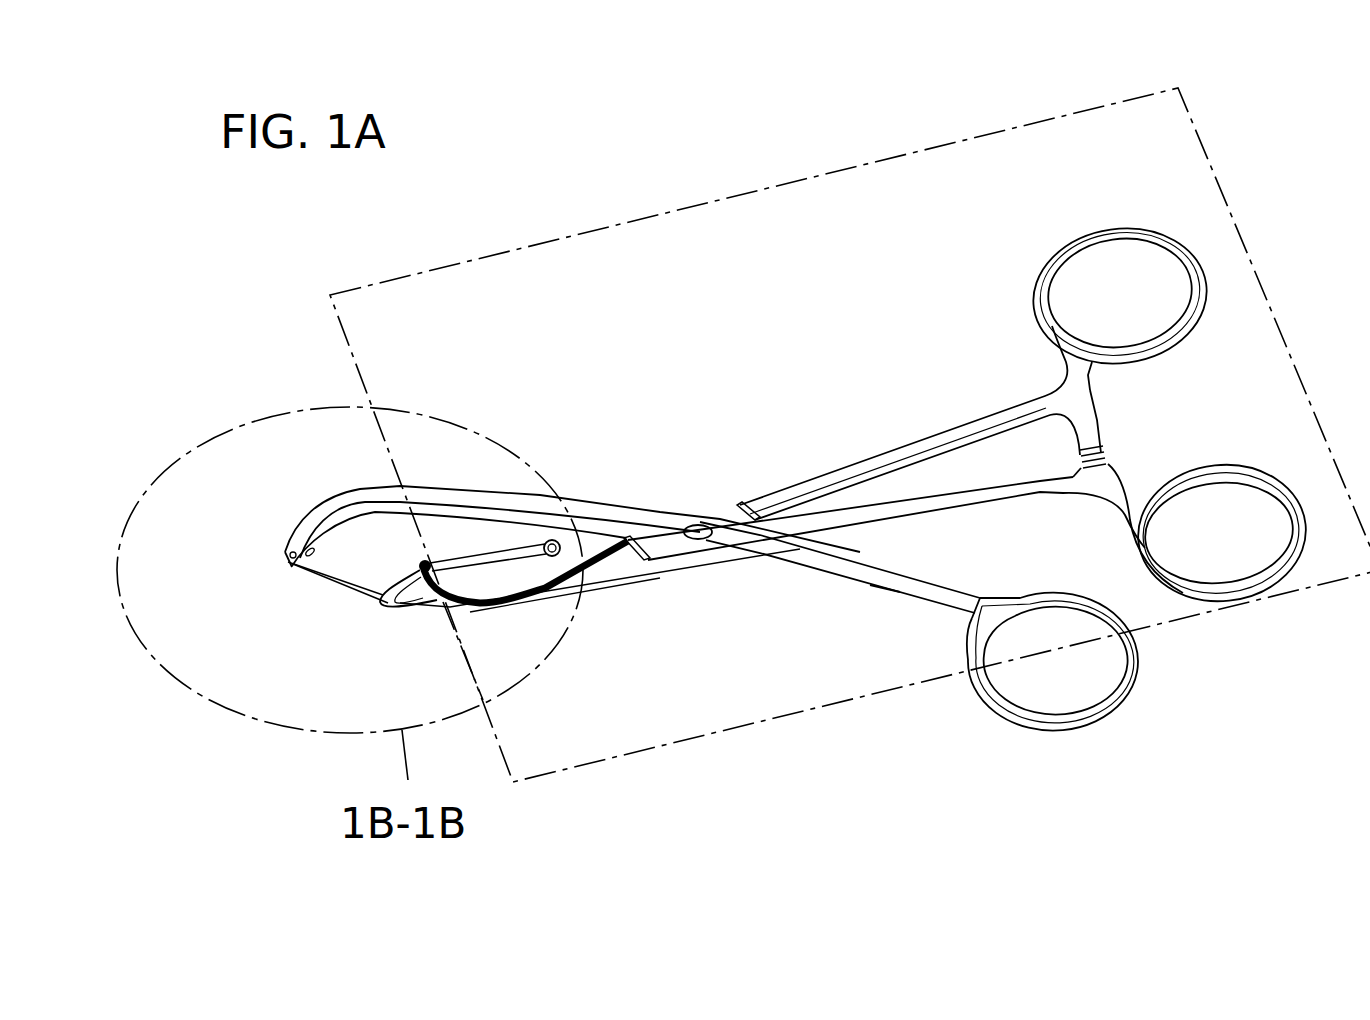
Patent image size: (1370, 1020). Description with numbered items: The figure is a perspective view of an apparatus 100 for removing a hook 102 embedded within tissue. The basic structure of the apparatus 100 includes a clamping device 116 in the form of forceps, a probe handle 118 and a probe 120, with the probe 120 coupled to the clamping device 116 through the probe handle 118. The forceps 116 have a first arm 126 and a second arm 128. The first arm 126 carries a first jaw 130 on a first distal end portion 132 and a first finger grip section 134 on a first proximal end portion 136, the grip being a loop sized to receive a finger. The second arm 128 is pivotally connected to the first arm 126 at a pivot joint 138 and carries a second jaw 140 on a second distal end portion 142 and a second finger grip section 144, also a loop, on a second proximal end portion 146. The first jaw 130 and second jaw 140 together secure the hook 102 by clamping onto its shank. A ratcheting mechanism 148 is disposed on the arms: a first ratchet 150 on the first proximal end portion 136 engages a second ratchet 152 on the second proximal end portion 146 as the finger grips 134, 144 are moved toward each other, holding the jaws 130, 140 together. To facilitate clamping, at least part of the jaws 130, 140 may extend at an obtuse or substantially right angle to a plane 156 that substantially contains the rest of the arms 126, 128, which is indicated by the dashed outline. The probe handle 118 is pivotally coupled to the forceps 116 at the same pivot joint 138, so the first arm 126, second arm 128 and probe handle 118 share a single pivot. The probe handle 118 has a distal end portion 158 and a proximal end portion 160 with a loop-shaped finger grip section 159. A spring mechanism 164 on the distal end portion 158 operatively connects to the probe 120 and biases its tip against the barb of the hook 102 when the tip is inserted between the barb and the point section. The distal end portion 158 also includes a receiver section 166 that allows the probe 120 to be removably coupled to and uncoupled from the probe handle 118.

The apparatus 100 is at (720, 105).
The hook 102 is at (395, 572).
The clamping device 116 is at (798, 456).
The probe handle 118 is at (833, 583).
The probe 120 is at (475, 574).
The first arm 126 is at (858, 463).
The second arm 128 is at (1040, 508).
The first jaw 130 is at (446, 611).
The first distal end portion 132 is at (605, 577).
The first finger grip section 134 is at (1092, 232).
The first proximal end portion 136 is at (991, 418).
The pivot joint 138 is at (697, 525).
The second jaw 140 is at (426, 559).
The second distal end portion 142 is at (585, 572).
The second finger grip section 144 is at (1212, 590).
The second proximal end portion 146 is at (992, 508).
The ratcheting mechanism 148 is at (1163, 426).
The first ratchet 150 is at (1102, 402).
The second ratchet 152 is at (1108, 452).
The plane 156 is at (1025, 110).
The distal end portion 158 is at (362, 495).
The finger grip section 159 is at (1063, 735).
The proximal end portion 160 is at (880, 587).
The spring mechanism 164 is at (327, 573).
The receiver section 166 is at (300, 517).